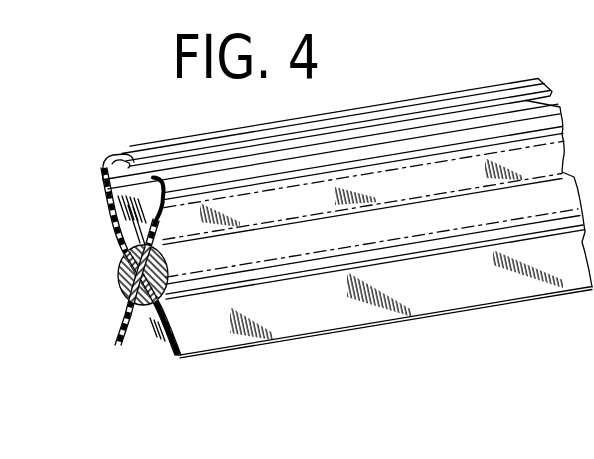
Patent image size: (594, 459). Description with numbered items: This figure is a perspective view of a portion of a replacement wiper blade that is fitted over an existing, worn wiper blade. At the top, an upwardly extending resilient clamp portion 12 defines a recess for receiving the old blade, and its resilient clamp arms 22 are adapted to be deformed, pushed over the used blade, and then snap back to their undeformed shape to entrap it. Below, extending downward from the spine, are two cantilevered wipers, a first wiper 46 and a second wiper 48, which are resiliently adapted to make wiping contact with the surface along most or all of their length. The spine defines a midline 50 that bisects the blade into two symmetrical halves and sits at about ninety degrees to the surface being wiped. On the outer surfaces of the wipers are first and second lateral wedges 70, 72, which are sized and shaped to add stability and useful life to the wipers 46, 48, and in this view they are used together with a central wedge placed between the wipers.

The clamp portion 12 is at (117, 195).
The clamp arms 22 is at (142, 157).
The first wiper 46 is at (120, 347).
The second wiper 48 is at (217, 337).
The midline 50 is at (118, 262).
The first lateral wedge 70 is at (122, 283).
The second lateral wedge 72 is at (150, 328).